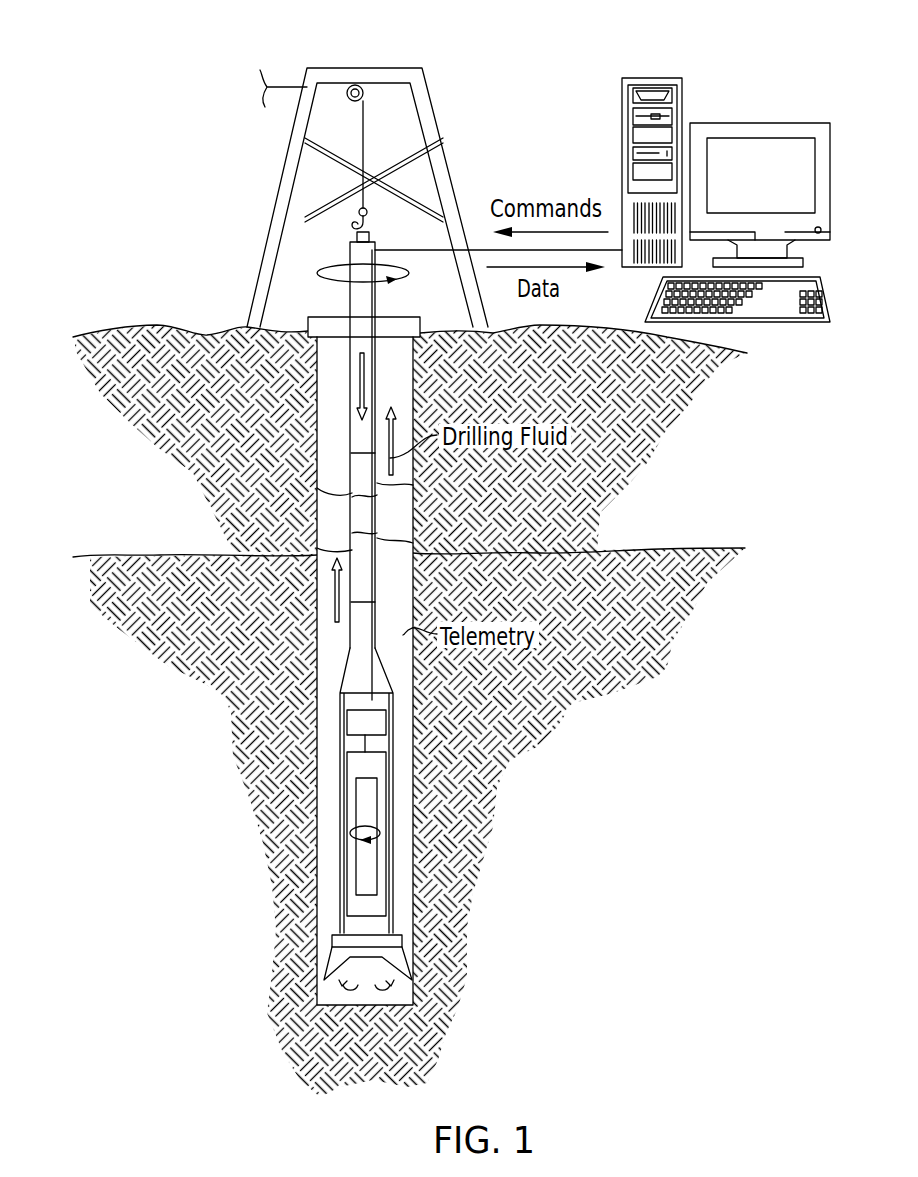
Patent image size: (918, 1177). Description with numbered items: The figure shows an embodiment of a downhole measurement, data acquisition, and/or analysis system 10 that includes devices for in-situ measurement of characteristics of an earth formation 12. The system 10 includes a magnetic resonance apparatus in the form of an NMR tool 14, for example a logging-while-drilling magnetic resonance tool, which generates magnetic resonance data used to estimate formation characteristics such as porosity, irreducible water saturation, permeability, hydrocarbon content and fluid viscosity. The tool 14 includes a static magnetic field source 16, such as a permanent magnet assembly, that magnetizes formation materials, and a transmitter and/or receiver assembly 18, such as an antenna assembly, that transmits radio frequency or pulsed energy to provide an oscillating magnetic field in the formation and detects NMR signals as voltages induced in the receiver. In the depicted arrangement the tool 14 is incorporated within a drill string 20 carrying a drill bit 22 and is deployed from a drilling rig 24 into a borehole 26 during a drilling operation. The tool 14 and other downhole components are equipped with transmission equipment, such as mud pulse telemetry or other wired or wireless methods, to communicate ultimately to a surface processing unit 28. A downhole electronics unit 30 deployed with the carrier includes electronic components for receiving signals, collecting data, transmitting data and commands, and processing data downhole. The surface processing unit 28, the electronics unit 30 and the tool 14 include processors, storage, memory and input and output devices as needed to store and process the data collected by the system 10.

The downhole measurement, data acquisition, and/or analysis system 10 is at (166, 253).
The earth formation 12 is at (565, 654).
The NMR tool 14 is at (353, 770).
The static magnetic field source 16 is at (367, 793).
The transmitter and/or receiver assembly 18 is at (357, 830).
The drill string 20 is at (353, 628).
The drill bit 22 is at (337, 962).
The drilling rig 24 is at (277, 203).
The borehole 26 is at (337, 457).
The surface processing unit 28 is at (653, 78).
The downhole electronics unit 30 is at (358, 725).